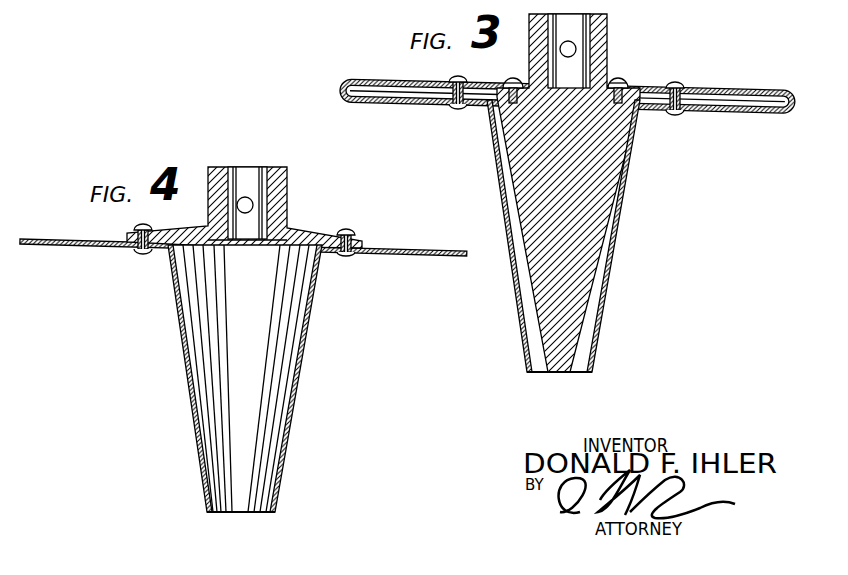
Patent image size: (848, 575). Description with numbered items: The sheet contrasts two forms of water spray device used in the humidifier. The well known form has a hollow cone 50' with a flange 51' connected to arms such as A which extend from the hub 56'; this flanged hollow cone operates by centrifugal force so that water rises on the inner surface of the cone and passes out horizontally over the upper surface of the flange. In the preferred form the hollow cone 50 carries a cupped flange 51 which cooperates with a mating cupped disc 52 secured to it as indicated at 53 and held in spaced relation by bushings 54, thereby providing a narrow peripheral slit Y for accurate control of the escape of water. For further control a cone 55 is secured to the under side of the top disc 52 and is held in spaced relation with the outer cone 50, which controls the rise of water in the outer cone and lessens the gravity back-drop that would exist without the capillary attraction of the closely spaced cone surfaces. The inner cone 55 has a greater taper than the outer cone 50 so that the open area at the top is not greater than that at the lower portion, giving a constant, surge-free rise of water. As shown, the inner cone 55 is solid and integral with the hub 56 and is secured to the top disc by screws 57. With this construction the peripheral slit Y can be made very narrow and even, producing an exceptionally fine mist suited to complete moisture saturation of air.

In FIG. 3, the hollow cone 50 is at (583, 236).
In FIG. 3, the cupped flange 51 is at (567, 96).
In FIG. 3, the cupped disc 52 is at (742, 80).
In FIG. 3, the securing means 53 is at (675, 114).
In FIG. 3, the bushings 54 is at (681, 110).
In FIG. 3, the inner cone 55 is at (545, 355).
In FIG. 3, the hub 56 is at (582, 192).
In FIG. 3, the screws 57 is at (620, 79).
In FIG. 3, the peripheral slit Y is at (333, 93).
In FIG. 4, the hollow cone 50' is at (265, 378).
In FIG. 4, the flange 51' is at (243, 265).
In FIG. 4, the hub 56' is at (244, 195).
In FIG. 4, the arms A is at (315, 235).